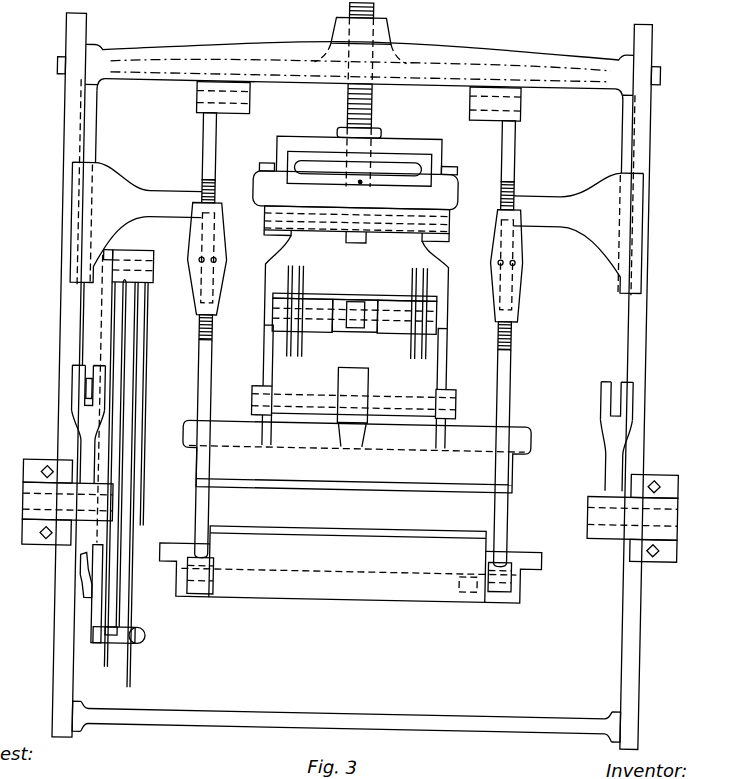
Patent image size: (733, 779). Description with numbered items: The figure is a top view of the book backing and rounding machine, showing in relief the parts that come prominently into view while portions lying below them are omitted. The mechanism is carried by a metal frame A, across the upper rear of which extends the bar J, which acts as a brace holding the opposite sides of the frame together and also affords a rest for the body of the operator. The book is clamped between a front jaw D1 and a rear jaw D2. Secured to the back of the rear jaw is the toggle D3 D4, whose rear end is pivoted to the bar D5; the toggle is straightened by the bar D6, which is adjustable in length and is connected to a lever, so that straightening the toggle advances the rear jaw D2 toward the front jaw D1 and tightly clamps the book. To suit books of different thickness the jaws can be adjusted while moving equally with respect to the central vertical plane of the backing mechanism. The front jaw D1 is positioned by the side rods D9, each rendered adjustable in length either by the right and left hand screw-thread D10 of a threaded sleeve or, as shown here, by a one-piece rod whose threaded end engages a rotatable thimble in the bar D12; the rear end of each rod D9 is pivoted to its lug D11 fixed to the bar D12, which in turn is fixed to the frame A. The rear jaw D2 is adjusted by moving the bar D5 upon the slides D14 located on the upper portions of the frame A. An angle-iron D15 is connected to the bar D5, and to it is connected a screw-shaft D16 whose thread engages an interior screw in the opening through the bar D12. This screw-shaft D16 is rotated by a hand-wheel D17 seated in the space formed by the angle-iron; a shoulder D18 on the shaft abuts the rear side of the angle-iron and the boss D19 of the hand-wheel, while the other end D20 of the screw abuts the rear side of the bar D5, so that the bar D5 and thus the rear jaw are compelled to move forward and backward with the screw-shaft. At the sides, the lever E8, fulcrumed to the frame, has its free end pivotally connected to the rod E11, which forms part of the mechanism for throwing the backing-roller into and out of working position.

The frame A is at (62, 337).
The bar J is at (379, 726).
The vertical rod D is at (510, 147).
The front jaw D1 is at (350, 564).
The rear jaw D2 is at (356, 456).
The toggle D3 is at (354, 395).
The toggle D4 is at (355, 327).
The bar D5 is at (356, 227).
The bar D6 is at (358, 292).
The side rod D9 is at (198, 167).
The right and left hand screw-thread D10 is at (191, 299).
The lug D11 is at (244, 110).
The bar D12 is at (359, 56).
The slide D14 is at (83, 135).
The angle-iron D15 is at (284, 146).
The screw-shaft D16 is at (342, 13).
The hand-wheel D17 is at (407, 170).
The shoulder D18 is at (366, 130).
The boss D19 is at (361, 182).
The end of the screw D20 is at (356, 191).
The lever E8 is at (86, 447).
The rod E11 is at (86, 373).